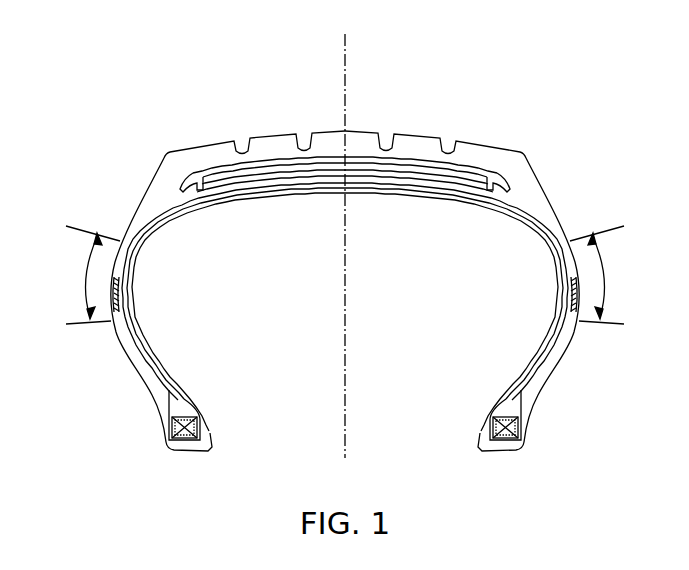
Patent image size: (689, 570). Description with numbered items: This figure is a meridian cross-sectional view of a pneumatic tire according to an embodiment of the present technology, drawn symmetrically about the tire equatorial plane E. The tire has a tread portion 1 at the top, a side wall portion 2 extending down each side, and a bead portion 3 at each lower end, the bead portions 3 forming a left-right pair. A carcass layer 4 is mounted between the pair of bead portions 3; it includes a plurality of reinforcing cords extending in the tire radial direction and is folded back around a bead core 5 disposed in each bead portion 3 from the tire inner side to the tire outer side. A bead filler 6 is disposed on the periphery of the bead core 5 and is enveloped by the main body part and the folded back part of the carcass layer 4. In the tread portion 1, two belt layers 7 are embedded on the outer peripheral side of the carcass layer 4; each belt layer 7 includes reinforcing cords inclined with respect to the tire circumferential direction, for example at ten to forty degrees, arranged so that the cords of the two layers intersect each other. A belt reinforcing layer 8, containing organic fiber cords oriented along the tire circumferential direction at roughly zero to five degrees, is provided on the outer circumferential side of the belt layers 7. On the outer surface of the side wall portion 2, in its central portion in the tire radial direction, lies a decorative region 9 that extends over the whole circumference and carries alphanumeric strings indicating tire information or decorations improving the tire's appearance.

The tread portion 1 is at (419, 132).
The side wall portion 2 is at (580, 336).
The bead portion 3 is at (540, 413).
The carcass layer 4 is at (563, 278).
The bead core 5 is at (497, 441).
The bead filler 6 is at (504, 403).
The belt layer 7 is at (392, 182).
The belt reinforcing layer 8 is at (476, 166).
The decorative region 9 is at (604, 278).
The tire equatorial plane E is at (344, 234).